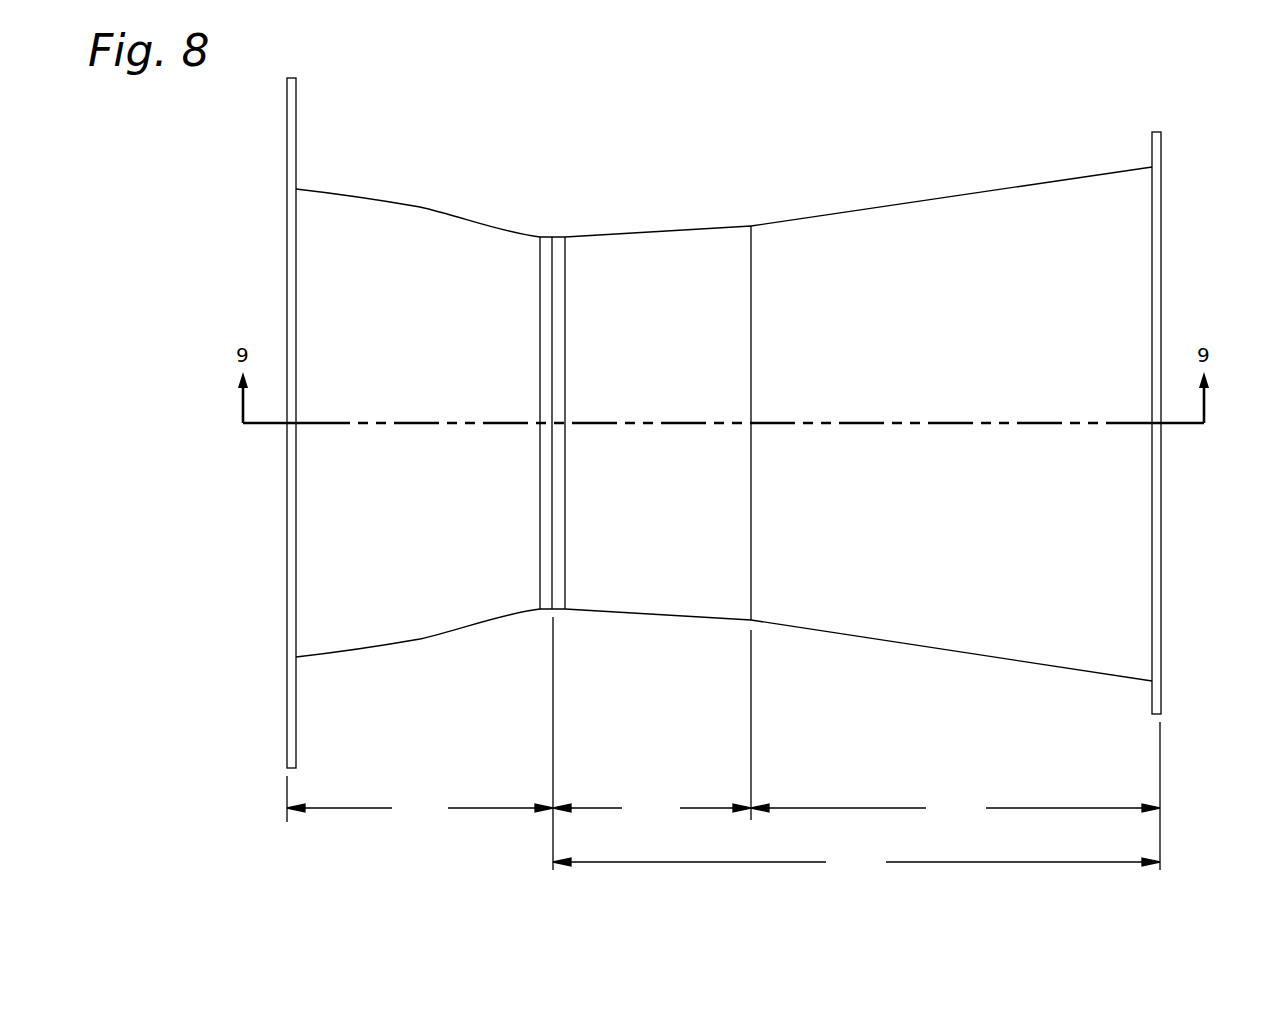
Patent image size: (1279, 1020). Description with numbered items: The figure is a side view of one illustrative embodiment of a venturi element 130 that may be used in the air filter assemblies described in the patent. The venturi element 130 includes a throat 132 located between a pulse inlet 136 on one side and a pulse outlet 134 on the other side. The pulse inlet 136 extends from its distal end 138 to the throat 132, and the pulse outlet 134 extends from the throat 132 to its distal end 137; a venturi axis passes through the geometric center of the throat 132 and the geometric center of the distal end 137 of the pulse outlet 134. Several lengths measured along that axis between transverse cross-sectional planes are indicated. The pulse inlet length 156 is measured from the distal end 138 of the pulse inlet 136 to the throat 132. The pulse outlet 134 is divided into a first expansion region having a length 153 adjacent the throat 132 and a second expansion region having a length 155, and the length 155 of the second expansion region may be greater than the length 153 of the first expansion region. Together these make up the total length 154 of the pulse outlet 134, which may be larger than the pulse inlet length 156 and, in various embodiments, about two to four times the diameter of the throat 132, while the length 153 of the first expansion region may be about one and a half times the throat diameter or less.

The venturi element 130 is at (948, 132).
The throat 132 is at (546, 237).
The pulse outlet 134 is at (908, 238).
The pulse inlet 136 is at (397, 228).
The distal end of the pulse outlet 137 is at (1162, 212).
The distal end of the pulse inlet 138 is at (287, 231).
The length of the first expansion region 153 is at (652, 743).
The total length of the pulse outlet 154 is at (856, 863).
The length of the second expansion region 155 is at (955, 796).
The pulse inlet length 156 is at (420, 799).